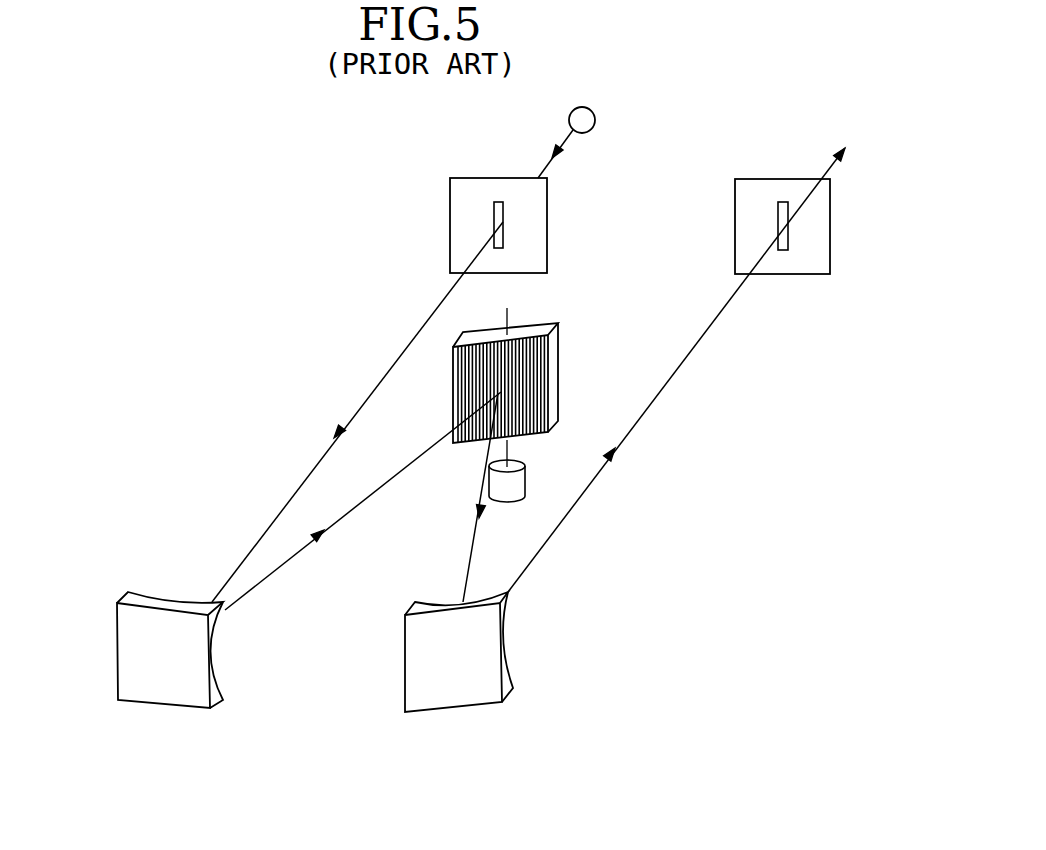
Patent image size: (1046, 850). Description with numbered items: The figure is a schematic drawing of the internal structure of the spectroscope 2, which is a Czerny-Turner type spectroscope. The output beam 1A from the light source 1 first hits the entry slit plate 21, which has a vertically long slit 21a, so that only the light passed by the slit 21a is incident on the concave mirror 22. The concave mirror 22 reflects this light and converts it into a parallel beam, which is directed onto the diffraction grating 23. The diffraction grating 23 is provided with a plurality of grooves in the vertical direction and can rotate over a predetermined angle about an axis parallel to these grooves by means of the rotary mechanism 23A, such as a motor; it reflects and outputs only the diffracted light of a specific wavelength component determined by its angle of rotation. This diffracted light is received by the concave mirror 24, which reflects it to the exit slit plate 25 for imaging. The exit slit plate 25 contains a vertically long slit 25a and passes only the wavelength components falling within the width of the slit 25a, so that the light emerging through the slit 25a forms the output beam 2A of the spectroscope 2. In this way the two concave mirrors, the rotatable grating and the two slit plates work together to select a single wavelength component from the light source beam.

The light source 1 is at (594, 116).
The output beam 1A is at (538, 178).
The spectroscope 2 is at (338, 352).
The output beam 2A is at (820, 177).
The entry slit plate 21 is at (472, 187).
The slit 21a is at (503, 212).
The concave mirror 22 is at (122, 657).
The diffraction grating 23 is at (537, 325).
The rotary mechanism 23A is at (524, 485).
The concave mirror 24 is at (487, 660).
The exit slit plate 25 is at (765, 187).
The slit 25a is at (786, 213).